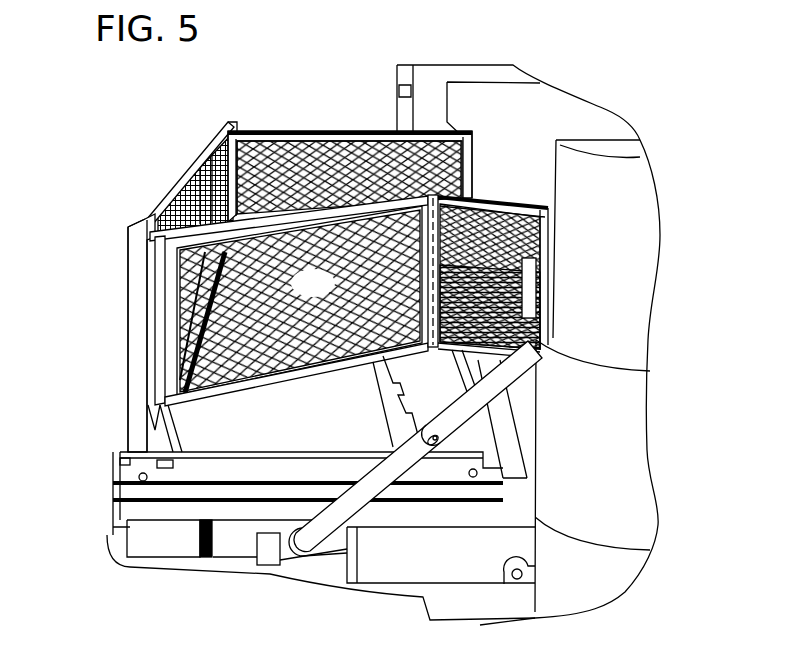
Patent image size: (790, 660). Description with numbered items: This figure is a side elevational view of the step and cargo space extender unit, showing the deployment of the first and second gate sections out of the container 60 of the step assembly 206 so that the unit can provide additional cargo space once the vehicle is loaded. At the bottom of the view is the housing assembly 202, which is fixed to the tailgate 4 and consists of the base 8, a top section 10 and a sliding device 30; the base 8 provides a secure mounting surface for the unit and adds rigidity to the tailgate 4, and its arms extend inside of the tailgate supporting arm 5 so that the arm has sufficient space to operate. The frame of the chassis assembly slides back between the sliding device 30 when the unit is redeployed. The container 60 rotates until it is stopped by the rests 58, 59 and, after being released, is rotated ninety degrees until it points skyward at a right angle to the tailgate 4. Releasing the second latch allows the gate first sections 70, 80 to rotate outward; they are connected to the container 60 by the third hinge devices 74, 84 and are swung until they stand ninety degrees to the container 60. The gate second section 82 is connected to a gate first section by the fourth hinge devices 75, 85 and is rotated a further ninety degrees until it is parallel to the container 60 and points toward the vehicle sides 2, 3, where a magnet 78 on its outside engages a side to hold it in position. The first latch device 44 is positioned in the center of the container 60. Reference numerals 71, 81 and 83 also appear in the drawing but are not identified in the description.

The side 2 is at (635, 335).
The side 3 is at (518, 100).
The tailgate 4 is at (372, 583).
The tailgate supporting arm 5 is at (413, 455).
The base 8 is at (203, 500).
The top section 10 is at (288, 470).
The sliding device 30 is at (237, 493).
The first latch device 44 is at (193, 163).
The rest 58 is at (350, 258).
The rest 59 is at (388, 445).
The container 60 is at (137, 378).
The first gate section 70 is at (372, 145).
The top screen mesh 71 is at (282, 162).
The third hinge device 74 is at (233, 137).
The fourth hinge device 75 is at (466, 165).
The magnet 78 is at (538, 284).
The first gate section 80 is at (197, 232).
The middle frame top rail 81 is at (177, 275).
The second gate section 82 is at (530, 270).
The hinge post 83 is at (453, 347).
The third hinge device 84 is at (153, 412).
The fourth hinge device 85 is at (379, 376).
The housing assembly 202 is at (103, 480).
The step assembly 206 is at (112, 228).